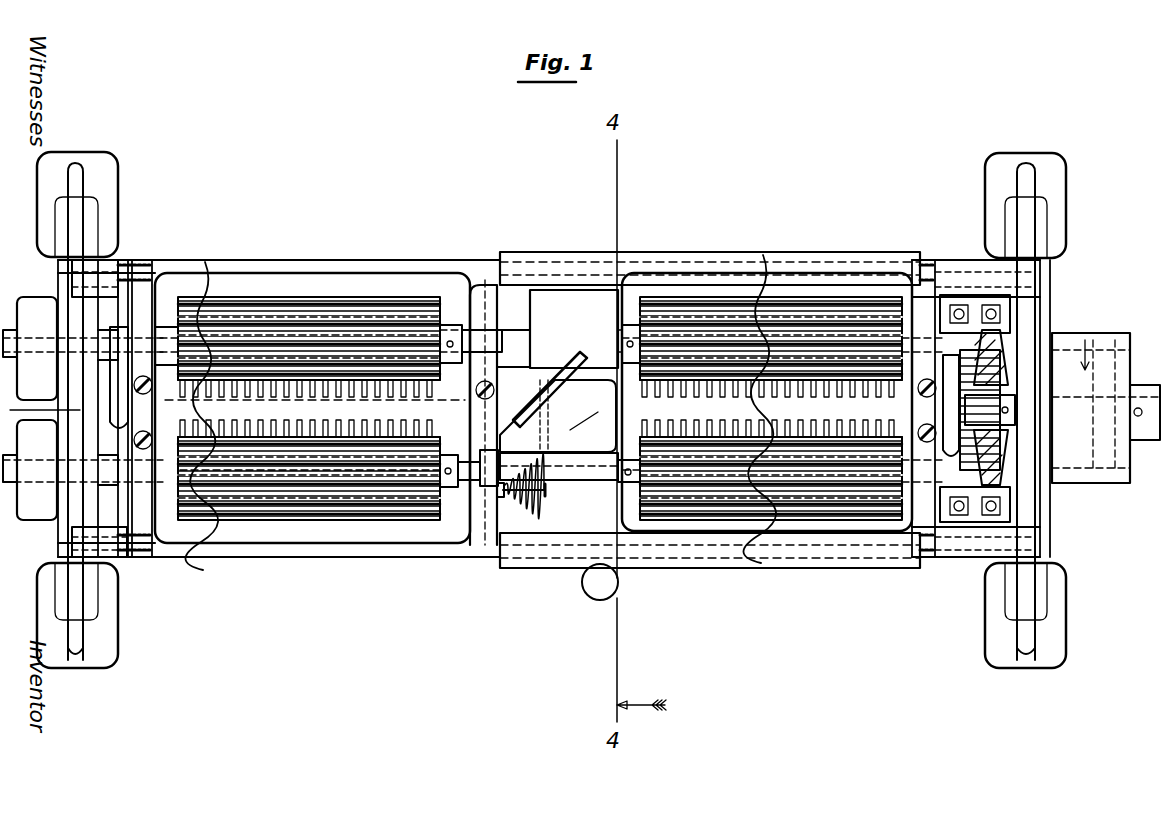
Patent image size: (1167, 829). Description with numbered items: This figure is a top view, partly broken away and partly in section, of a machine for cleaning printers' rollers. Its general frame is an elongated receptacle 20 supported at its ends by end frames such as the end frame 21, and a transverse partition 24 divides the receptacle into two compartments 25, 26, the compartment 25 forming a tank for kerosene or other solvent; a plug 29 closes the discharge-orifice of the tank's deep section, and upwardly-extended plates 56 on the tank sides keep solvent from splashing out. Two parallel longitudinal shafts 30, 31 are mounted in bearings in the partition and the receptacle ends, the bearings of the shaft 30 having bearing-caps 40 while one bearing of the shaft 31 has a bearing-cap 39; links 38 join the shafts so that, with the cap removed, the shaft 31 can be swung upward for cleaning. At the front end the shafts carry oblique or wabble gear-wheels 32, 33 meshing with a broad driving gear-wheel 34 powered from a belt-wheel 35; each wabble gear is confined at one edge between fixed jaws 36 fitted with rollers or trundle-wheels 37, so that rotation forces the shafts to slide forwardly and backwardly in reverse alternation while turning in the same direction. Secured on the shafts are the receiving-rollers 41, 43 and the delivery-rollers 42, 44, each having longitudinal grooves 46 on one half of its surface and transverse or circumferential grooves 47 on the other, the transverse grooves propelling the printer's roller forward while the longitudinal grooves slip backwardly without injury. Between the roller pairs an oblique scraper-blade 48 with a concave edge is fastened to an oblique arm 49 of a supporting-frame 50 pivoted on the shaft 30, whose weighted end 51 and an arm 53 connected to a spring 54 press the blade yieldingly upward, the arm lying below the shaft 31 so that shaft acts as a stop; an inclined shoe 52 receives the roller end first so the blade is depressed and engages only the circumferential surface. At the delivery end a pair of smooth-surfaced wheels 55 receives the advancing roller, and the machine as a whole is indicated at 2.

The machine 2 is at (40, 410).
The elongated receptacle 20 is at (378, 262).
The end frame 21 is at (1025, 470).
The transverse partition 24 is at (482, 290).
The compartment or tank 25 is at (559, 493).
The compartment 26 is at (315, 472).
The plug 29 is at (600, 590).
The longitudinal shaft 30 is at (168, 330).
The longitudinal shaft 31 is at (445, 490).
The oblique or wabble gear-wheel 32 is at (1000, 340).
The oblique or wabble gear-wheel 33 is at (1005, 492).
The broad driving gear-wheel 34 is at (1005, 433).
The belt-wheel 35 is at (1100, 343).
The fixed jaws 36 is at (955, 300).
The rollers or trundle-wheels 37 is at (965, 305).
The link 38 is at (128, 422).
The bearing-cap 39 is at (922, 405).
The bearing-cap 40 is at (180, 403).
The receiving-roller 41 is at (640, 320).
The delivery-roller 42 is at (442, 300).
The receiving-roller 43 is at (625, 535).
The delivery-roller 44 is at (435, 510).
The longitudinal grooves 46 is at (285, 300).
The transverse or circumferential grooves 47 is at (803, 409).
The oblique scraper-blade 48 is at (558, 416).
The oblique arm 49 is at (548, 385).
The supporting-frame 50 is at (535, 338).
The weighted end 51 is at (595, 290).
The inclined shoe 52 is at (595, 434).
The arm 53 is at (545, 495).
The spring 54 is at (507, 500).
The smooth-surfaced wheels 55 is at (83, 410).
The upwardly-extended plates 56 is at (548, 252).